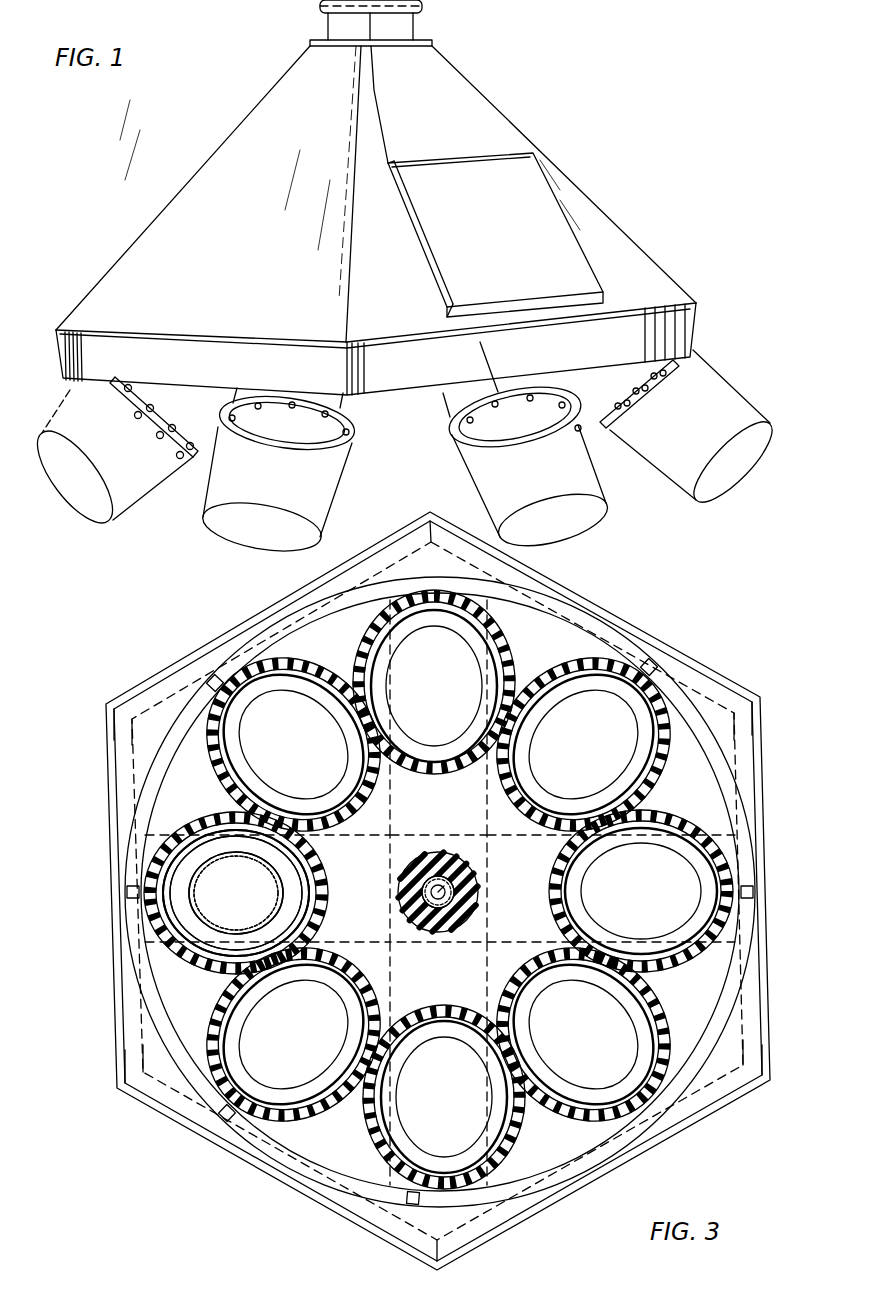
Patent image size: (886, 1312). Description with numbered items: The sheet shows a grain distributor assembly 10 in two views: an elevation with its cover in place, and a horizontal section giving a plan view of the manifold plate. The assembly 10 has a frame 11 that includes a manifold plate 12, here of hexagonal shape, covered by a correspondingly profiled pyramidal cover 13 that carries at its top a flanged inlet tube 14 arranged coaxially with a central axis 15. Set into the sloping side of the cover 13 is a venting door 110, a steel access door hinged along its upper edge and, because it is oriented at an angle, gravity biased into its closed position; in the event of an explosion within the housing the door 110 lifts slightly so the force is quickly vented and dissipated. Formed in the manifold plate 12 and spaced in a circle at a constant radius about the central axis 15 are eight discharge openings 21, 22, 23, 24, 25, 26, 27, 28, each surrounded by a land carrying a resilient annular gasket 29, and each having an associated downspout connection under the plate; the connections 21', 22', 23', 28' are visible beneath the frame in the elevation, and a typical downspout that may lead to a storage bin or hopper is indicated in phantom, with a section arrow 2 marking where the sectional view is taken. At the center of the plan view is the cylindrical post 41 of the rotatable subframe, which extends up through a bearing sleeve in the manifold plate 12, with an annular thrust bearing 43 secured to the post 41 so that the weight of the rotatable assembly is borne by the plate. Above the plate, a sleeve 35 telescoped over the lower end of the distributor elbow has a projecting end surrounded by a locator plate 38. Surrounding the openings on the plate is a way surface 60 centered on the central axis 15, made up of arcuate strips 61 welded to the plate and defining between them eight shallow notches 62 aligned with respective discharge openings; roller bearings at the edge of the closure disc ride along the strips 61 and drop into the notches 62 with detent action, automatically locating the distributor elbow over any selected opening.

In FIG. 1, the distributor assembly 10 is at (158, 152).
In FIG. 1, the pyramidal cover 13 is at (143, 258).
In FIG. 1, the flanged inlet tube 14 is at (415, 30).
In FIG. 1, the venting door 110 is at (553, 216).
In FIG. 1, the downspout connection 21' is at (499, 466).
In FIG. 1, the downspout connection 22' is at (278, 454).
In FIG. 1, the downspout connection 23' is at (111, 439).
In FIG. 1, the downspout connection 28' is at (680, 419).
In FIG. 1, the section line 2- 2 is at (515, 423).
In FIG. 3, the frame 11 is at (100, 704).
In FIG. 3, the manifold plate 12 is at (160, 822).
In FIG. 3, the central axis 15 is at (405, 876).
In FIG. 3, the discharge opening 21 is at (236, 893).
In FIG. 3, the discharge opening 22 is at (293, 744).
In FIG. 3, the discharge opening 23 is at (434, 686).
In FIG. 3, the discharge opening 24 is at (599, 757).
In FIG. 3, the discharge opening 25 is at (657, 904).
In FIG. 3, the discharge opening 26 is at (599, 1048).
In FIG. 3, the discharge opening 27 is at (459, 1110).
In FIG. 3, the discharge opening 28 is at (293, 1034).
In FIG. 3, the resilient annular gasket 29 is at (218, 722).
In FIG. 3, the sleeve 35 is at (205, 935).
In FIG. 3, the locator plate 38 is at (188, 915).
In FIG. 3, the cylindrical post 41 is at (436, 912).
In FIG. 3, the annular thrust bearing 43 is at (462, 884).
In FIG. 3, the way surface 60 is at (290, 1165).
In FIG. 3, the arcuate strips 61 is at (288, 600).
In FIG. 3, the shallow notches 62 is at (212, 677).